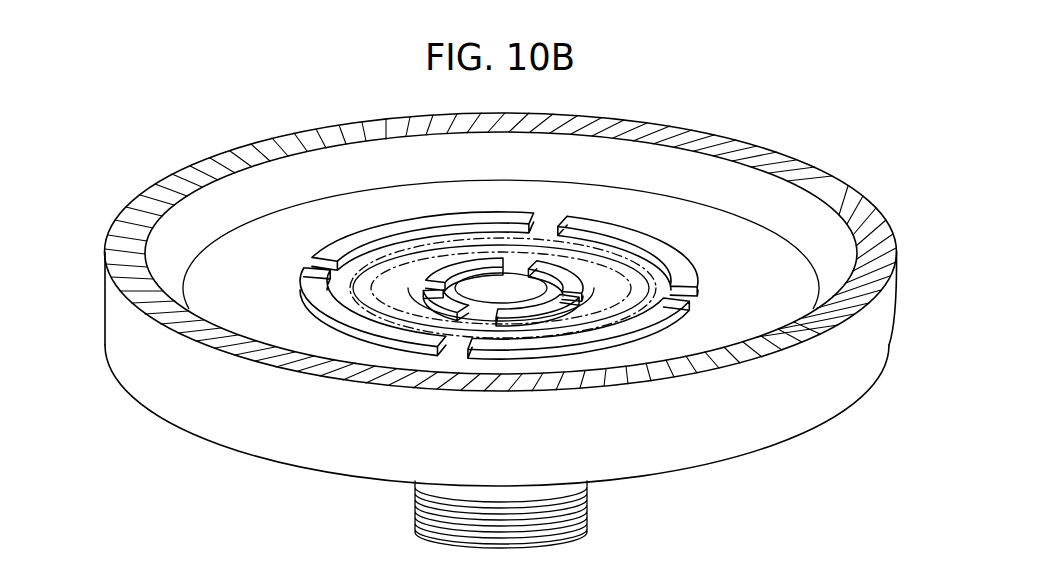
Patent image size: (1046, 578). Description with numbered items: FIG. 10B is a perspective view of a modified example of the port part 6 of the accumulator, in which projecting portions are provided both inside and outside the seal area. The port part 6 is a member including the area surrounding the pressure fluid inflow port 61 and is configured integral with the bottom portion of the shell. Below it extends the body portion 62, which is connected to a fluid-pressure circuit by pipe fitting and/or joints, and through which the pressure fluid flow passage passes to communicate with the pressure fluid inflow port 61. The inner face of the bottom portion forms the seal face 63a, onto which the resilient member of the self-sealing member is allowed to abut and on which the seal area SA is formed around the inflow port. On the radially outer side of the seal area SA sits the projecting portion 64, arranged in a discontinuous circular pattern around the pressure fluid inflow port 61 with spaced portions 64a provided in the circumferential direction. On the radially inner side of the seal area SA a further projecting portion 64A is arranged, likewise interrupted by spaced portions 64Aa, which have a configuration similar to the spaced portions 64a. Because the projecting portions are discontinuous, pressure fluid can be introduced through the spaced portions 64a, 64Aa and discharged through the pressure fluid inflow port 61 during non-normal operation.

The port part 6 is at (279, 291).
The pressure fluid inflow port 61 is at (567, 273).
The body portion 62 is at (587, 497).
The seal face 63a is at (663, 277).
The projecting portion 64 is at (377, 237).
The projecting portion 64A is at (444, 290).
The spaced portion 64a is at (548, 228).
The spaced portion 64Aa is at (513, 256).
The seal area SA is at (377, 273).